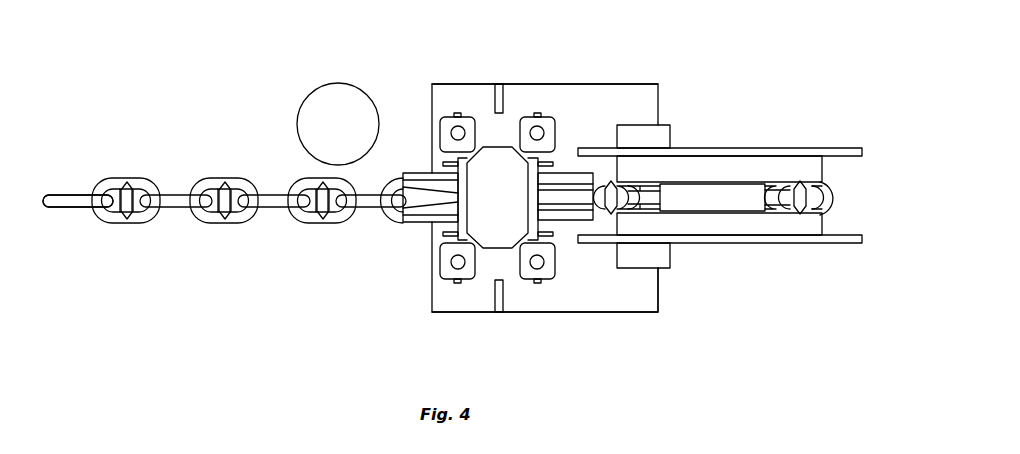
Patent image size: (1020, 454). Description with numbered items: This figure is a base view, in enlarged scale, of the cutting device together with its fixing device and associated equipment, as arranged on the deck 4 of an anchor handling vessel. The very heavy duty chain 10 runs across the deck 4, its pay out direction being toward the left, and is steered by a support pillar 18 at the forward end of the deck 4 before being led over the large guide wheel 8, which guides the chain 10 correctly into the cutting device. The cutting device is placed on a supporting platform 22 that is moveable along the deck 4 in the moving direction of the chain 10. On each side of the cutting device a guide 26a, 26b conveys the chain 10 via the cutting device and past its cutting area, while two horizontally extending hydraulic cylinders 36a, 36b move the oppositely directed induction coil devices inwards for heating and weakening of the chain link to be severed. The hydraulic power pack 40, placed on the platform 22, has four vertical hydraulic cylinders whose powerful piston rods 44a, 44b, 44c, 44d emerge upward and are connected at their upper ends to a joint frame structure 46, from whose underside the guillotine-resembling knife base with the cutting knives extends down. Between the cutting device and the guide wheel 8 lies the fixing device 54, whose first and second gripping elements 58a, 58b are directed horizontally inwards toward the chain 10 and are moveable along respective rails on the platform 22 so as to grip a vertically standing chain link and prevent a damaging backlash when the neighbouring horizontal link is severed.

The deck 4 is at (255, 262).
The chain 10 is at (72, 199).
The support pillar 18 is at (332, 104).
The supporting platform 22 is at (553, 56).
The first guide 26a is at (418, 200).
The second guide 26b is at (573, 212).
The first hydraulic cylinder 36a is at (499, 82).
The second hydraulic cylinder 36b is at (499, 313).
The hydraulic power pack 40 is at (452, 296).
The first piston rod 44a is at (451, 133).
The second piston rod 44b is at (451, 262).
The third piston rod 44c is at (543, 133).
The fourth piston rod 44d is at (538, 268).
The joint frame structure 46 is at (487, 135).
The fixing device 54 is at (641, 286).
The first gripping element 58a is at (660, 137).
The second gripping element 58b is at (660, 258).
The guide wheel 8 is at (785, 168).